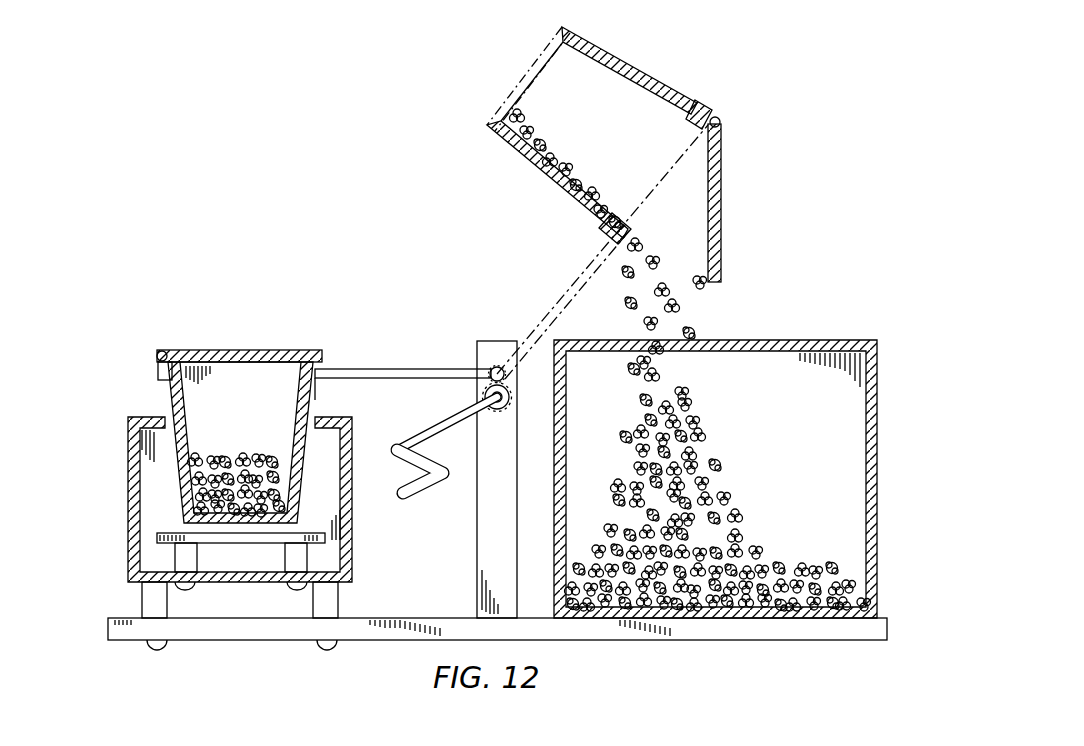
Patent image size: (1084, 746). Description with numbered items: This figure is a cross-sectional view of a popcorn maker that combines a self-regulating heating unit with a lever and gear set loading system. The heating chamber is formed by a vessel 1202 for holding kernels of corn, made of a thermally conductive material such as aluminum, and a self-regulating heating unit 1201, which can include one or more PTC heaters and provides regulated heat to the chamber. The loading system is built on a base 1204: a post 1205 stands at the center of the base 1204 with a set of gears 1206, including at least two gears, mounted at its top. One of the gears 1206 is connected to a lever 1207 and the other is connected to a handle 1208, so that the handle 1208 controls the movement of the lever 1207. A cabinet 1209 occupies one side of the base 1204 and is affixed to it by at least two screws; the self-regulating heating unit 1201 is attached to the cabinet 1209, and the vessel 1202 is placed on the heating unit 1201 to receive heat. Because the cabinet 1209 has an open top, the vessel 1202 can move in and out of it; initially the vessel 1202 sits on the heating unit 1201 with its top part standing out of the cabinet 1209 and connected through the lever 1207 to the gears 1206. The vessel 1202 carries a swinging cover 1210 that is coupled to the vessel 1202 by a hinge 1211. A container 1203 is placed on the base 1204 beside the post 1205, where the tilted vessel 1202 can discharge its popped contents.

The self-regulating heating unit 1201 is at (238, 557).
The vessel 1202 is at (267, 423).
The container 1203 is at (814, 472).
The base 1204 is at (745, 641).
The post 1205 is at (477, 527).
The set of gears 1206 is at (497, 366).
The lever 1207 is at (372, 369).
The handle 1208 is at (415, 442).
The cabinet 1209 is at (353, 557).
The swinging cover 1210 is at (215, 350).
The hinge 1211 is at (160, 352).